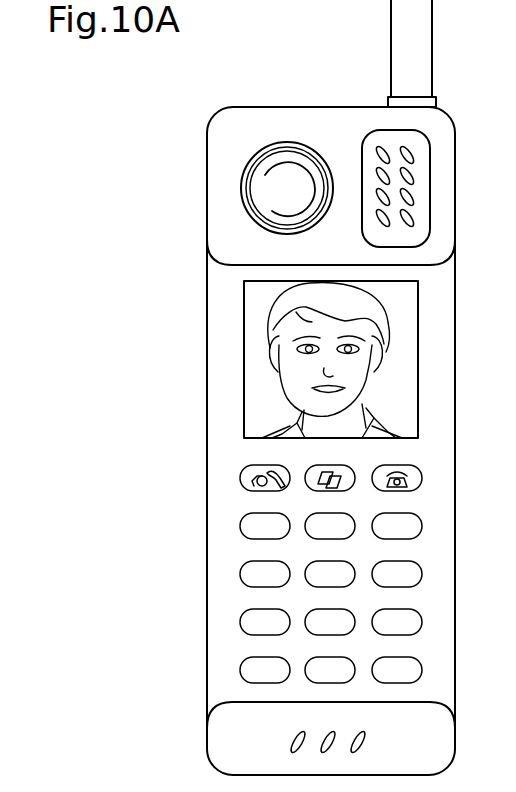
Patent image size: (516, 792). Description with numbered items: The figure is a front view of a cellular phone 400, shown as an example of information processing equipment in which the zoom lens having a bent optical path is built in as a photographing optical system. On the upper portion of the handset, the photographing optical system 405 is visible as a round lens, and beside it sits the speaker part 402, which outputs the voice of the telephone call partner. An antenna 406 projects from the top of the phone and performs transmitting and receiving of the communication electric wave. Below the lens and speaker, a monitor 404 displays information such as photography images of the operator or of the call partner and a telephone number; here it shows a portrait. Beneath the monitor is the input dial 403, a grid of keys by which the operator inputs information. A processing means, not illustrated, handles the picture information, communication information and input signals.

The cellular phone 400 is at (200, 389).
The speaker part 402 is at (372, 134).
The input dial 403 is at (240, 582).
The monitor 404 is at (404, 321).
The photographing optical system 405 is at (260, 193).
The antenna 406 is at (403, 25).